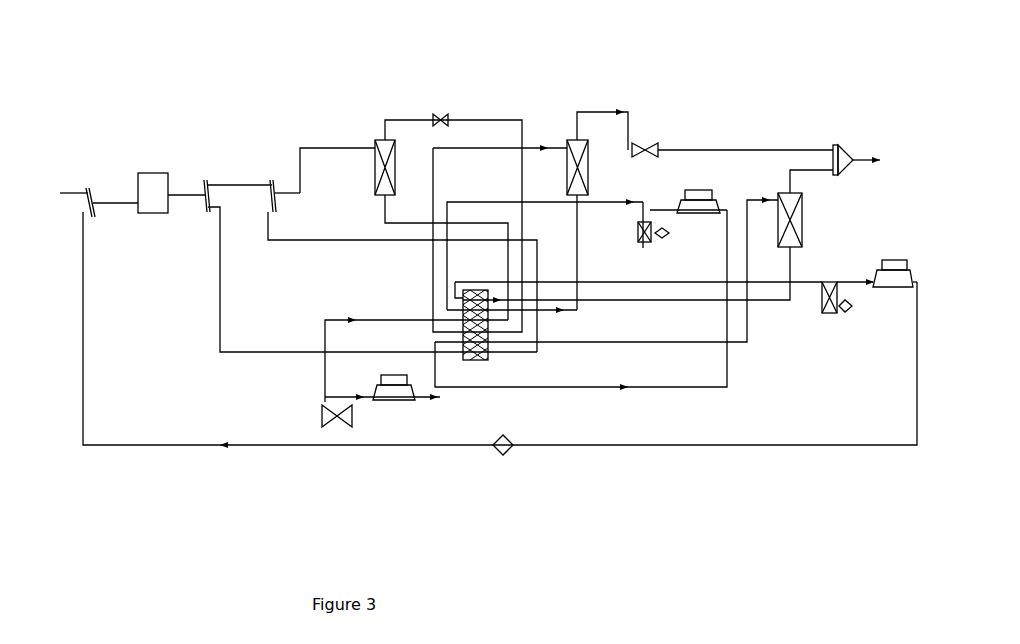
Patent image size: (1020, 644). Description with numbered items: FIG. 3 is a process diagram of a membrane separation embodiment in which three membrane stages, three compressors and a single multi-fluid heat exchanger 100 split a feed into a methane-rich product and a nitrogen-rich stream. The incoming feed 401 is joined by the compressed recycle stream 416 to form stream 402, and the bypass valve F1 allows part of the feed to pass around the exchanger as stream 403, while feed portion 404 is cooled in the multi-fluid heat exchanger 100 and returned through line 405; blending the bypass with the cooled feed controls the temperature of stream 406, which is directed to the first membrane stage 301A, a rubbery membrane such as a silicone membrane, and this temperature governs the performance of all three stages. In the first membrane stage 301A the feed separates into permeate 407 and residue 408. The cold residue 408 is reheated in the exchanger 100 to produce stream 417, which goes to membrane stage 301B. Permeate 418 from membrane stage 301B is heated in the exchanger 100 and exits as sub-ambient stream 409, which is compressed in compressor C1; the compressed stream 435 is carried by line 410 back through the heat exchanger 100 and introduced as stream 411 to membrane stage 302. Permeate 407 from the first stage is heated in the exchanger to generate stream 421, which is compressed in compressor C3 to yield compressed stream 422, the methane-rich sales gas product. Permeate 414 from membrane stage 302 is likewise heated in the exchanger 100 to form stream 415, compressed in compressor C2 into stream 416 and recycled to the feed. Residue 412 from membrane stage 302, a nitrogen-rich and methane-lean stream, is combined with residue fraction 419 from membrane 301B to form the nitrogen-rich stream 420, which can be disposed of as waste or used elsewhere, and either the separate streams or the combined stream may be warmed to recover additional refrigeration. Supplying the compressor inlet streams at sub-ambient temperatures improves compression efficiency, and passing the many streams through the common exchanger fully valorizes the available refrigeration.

The feed gas line 401 is at (62, 188).
The feed stream 402 is at (115, 207).
The bypass valve F1 is at (158, 212).
The bypass stream 403 is at (243, 183).
The feed portion 404 is at (260, 355).
The line 405 is at (325, 241).
The cooled feed stream 406 is at (322, 145).
The permeate stream 407 is at (418, 227).
The residue stream 408 is at (483, 120).
The heated permeate stream 409 is at (600, 204).
The line 410 is at (663, 388).
The membrane feed stream 411 is at (748, 200).
The residue stream 412 is at (802, 175).
The permeate stream 414 is at (647, 303).
The heated permeate stream 415 is at (582, 280).
The recycle stream 416 is at (167, 447).
The reheated residue stream 417 is at (473, 150).
The permeate stream 418 is at (547, 313).
The residue fraction 419 is at (703, 148).
The nitrogen-rich stream 420 is at (865, 163).
The heated permeate stream 421 is at (337, 317).
The compressed product stream 422 is at (427, 398).
The compressed stream 435 is at (673, 225).
The first membrane stage 301A is at (373, 177).
The second membrane stage 301B is at (590, 172).
The third membrane stage 302 is at (802, 232).
The multi-fluid heat exchanger 100 is at (488, 358).
The compressor C1 is at (643, 248).
The compressor C2 is at (830, 313).
The compressor C3 is at (322, 415).